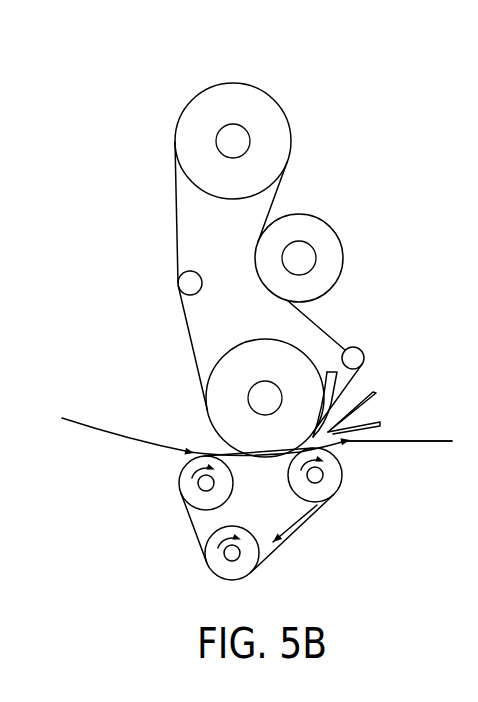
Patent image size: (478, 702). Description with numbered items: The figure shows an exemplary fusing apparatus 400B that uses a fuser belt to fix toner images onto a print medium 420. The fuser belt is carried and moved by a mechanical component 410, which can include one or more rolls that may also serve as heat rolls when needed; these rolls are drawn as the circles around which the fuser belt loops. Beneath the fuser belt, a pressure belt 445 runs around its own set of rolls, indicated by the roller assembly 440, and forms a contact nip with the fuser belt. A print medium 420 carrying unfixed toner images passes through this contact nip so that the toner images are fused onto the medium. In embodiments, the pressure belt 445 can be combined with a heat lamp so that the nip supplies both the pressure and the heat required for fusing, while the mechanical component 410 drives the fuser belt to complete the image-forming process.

The fusing apparatus 400B is at (277, 244).
The mechanical component 410 is at (310, 176).
The print medium 420 is at (420, 443).
The roller assembly 440 is at (165, 486).
The pressure belt 445 is at (319, 509).